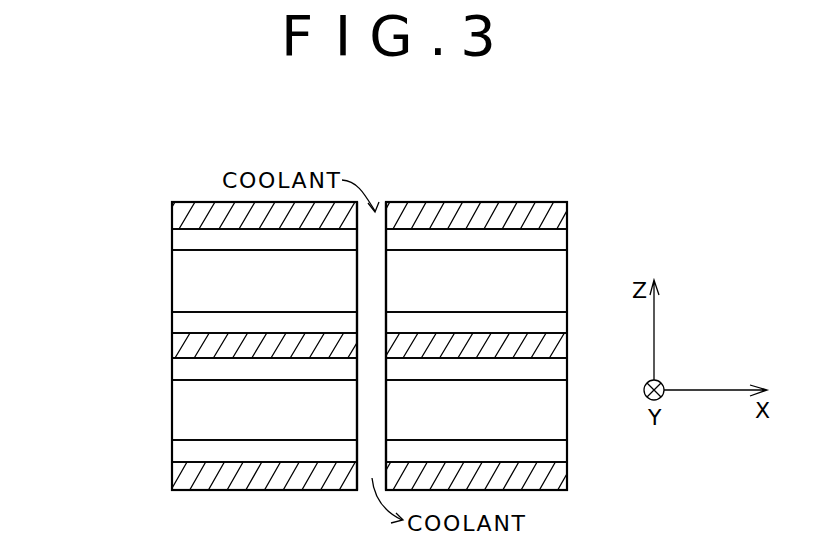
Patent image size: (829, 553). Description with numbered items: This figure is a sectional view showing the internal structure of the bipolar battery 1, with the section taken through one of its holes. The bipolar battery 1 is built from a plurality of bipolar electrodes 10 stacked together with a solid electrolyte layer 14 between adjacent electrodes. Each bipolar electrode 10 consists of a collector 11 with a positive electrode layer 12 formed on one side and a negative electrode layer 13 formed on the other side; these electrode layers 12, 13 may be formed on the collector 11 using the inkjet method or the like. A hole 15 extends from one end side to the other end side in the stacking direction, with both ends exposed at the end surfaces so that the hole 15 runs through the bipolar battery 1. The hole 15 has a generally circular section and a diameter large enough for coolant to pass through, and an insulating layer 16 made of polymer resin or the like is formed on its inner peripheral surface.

The bipolar battery 1 is at (194, 190).
The bipolar electrode 10 is at (91, 288).
The collector 11 is at (553, 211).
The positive electrode layer 12 is at (550, 448).
The negative electrode layer 13 is at (552, 238).
The solid electrolyte layer 14 is at (181, 282).
The hole 15 is at (384, 210).
The insulating layer 16 is at (359, 484).